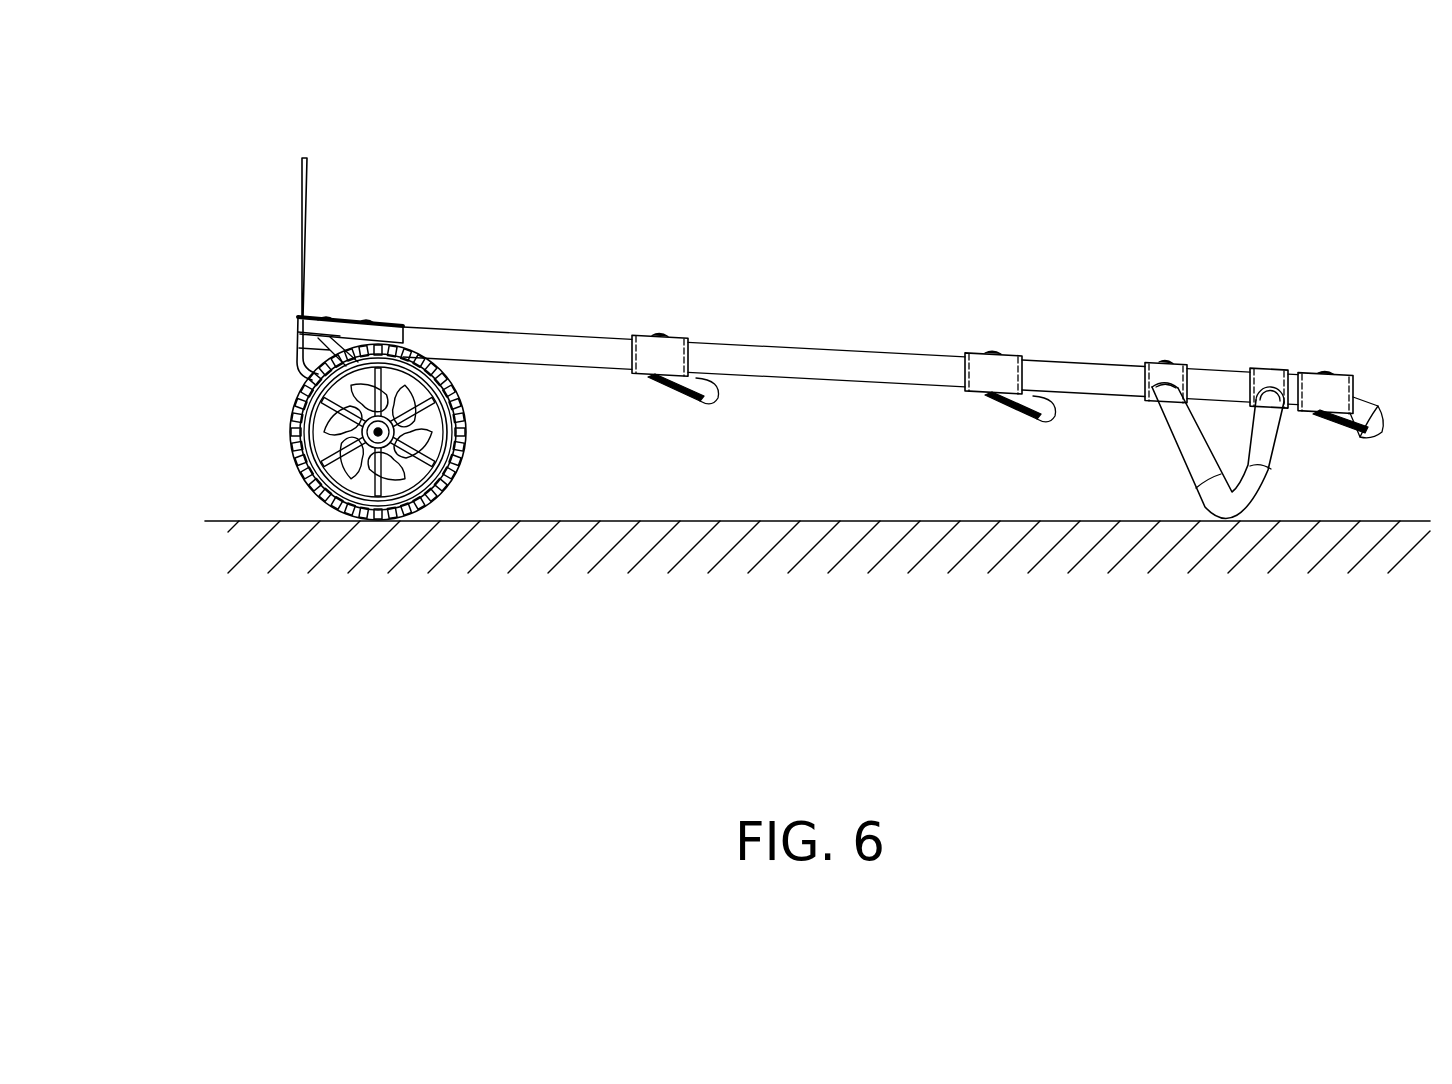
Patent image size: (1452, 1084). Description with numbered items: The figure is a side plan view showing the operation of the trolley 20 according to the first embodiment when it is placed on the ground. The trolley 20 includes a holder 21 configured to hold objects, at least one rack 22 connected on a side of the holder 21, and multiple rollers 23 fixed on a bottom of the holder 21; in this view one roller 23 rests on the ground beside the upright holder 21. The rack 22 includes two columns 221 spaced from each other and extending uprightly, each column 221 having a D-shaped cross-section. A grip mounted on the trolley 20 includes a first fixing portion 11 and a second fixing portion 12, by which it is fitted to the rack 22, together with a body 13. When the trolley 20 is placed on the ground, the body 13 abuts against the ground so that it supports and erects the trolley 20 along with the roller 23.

The first fixing portion 11 is at (1275, 385).
The second fixing portion 12 is at (1167, 378).
The body 13 is at (1275, 455).
The trolley 20 is at (850, 307).
The holder 21 is at (305, 208).
The rack 22 is at (900, 357).
The column 221 is at (1078, 385).
The roller 23 is at (290, 410).